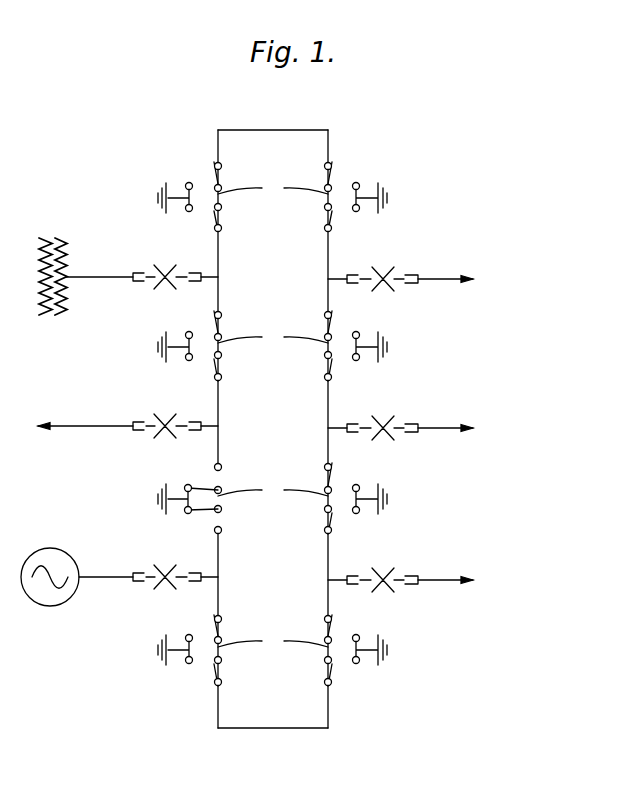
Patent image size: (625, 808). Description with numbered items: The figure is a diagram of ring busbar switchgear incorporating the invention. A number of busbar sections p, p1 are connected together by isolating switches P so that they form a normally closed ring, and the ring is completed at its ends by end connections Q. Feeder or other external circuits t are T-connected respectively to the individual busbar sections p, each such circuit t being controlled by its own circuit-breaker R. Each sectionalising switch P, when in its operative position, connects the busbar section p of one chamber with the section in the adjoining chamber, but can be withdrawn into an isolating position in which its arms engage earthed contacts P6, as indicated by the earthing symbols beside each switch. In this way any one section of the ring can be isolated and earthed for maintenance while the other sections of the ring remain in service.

The end connections Q is at (281, 129).
The busbar section p1 is at (218, 142).
The busbar section p is at (216, 288).
The isolating switch P is at (273, 416).
The earthed contact P6 is at (358, 184).
The circuit-breaker R is at (174, 268).
The feeder or other external circuit t is at (103, 276).